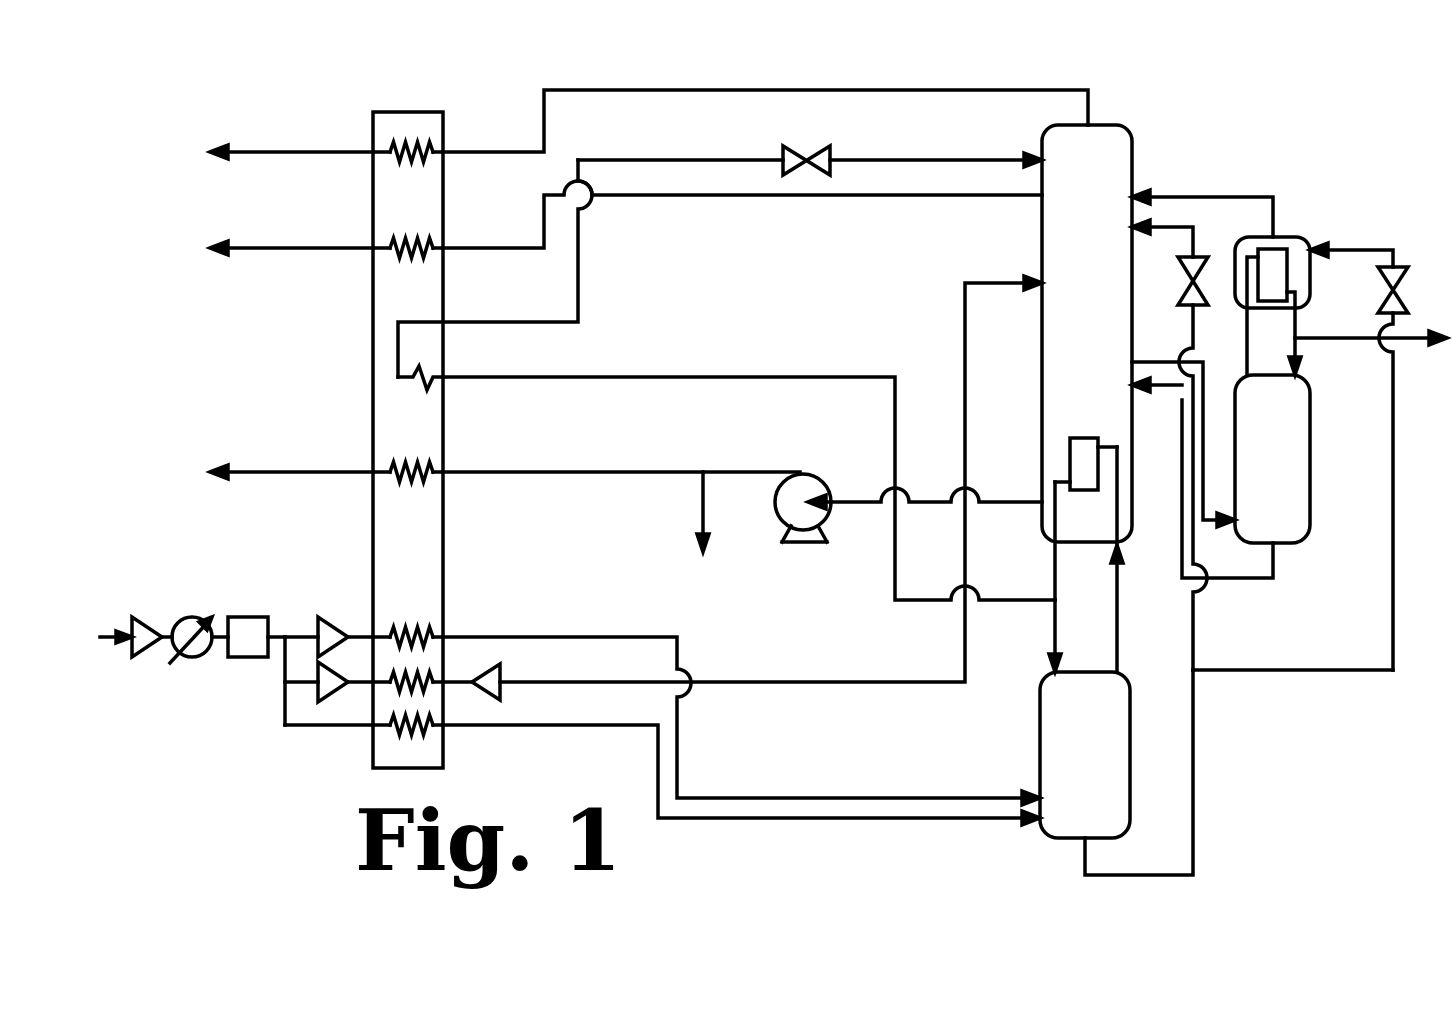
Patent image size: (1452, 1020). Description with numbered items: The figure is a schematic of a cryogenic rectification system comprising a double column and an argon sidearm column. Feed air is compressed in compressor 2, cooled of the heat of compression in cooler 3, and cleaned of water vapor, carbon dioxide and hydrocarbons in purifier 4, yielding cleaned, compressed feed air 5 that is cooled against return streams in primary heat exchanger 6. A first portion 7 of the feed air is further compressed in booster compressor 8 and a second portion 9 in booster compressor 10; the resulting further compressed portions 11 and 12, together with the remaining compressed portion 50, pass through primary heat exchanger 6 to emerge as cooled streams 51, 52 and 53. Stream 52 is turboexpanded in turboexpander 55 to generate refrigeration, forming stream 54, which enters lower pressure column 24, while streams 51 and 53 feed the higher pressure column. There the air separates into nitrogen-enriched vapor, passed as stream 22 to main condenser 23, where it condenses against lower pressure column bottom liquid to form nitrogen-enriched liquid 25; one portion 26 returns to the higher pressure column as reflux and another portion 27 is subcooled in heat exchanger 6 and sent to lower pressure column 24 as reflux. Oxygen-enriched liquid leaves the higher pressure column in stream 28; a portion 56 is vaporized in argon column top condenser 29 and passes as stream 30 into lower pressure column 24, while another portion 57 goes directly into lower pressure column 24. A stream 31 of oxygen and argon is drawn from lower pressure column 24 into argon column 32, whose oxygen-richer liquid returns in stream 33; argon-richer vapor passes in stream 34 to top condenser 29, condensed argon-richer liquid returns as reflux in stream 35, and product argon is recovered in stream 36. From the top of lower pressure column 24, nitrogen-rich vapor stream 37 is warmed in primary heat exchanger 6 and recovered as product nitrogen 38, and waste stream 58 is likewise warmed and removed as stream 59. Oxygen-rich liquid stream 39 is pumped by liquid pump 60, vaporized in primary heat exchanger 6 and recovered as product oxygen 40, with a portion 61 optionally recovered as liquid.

The compressor 2 is at (160, 612).
The cooler 3 is at (180, 612).
The purifier 4 is at (233, 613).
The cleaned, compressed feed air 5 is at (284, 635).
The primary heat exchanger 6 is at (372, 750).
The first portion of feed air 7 is at (301, 633).
The booster compressor 8 is at (332, 614).
The second portion of feed air 9 is at (297, 677).
The booster compressor 10 is at (338, 666).
The further compressed feed air portion 11 is at (357, 633).
The further compressed feed air portion 12 is at (362, 690).
The nitrogen-enriched vapor stream 22 is at (1118, 580).
The main condenser 23 is at (1078, 437).
The lower pressure column 24 is at (1040, 237).
The nitrogen-enriched liquid 25 is at (1054, 578).
The portion of nitrogen-enriched liquid 26 is at (1053, 613).
The portion of nitrogen-enriched liquid 27 is at (923, 602).
The oxygen-enriched liquid stream 28 is at (1083, 865).
The argon column top condenser 29 is at (1300, 237).
The oxygen-enriched fluid stream 30 is at (1187, 195).
The oxygen and argon stream 31 is at (1205, 405).
The argon column 32 is at (1312, 463).
The oxygen-richer liquid stream 33 is at (1274, 568).
The argon-richer vapor stream 34 is at (1247, 335).
The argon-richer liquid stream 35 is at (1298, 330).
The product argon stream 36 is at (1416, 345).
The nitrogen-rich vapor stream 37 is at (1050, 92).
The product nitrogen 38 is at (270, 150).
The liquid oxygen stream 39 is at (845, 505).
The product oxygen 40 is at (268, 470).
The remaining compressed feed air portion 50 is at (283, 703).
The compressed, cleaned and cooled feed air stream 51 is at (456, 637).
The compressed, cleaned and cooled feed air stream 52 is at (470, 686).
The compressed, cleaned and cooled feed air stream 53 is at (538, 727).
The turboexpanded stream 54 is at (584, 681).
The turboexpander 55 is at (485, 667).
The portion of oxygen-enriched liquid 56 is at (1320, 672).
The portion of oxygen-enriched liquid 57 is at (1196, 648).
The waste stream 58 is at (898, 197).
The waste stream 59 is at (270, 246).
The liquid pump 60 is at (817, 477).
The portion of liquid oxygen 61 is at (703, 507).